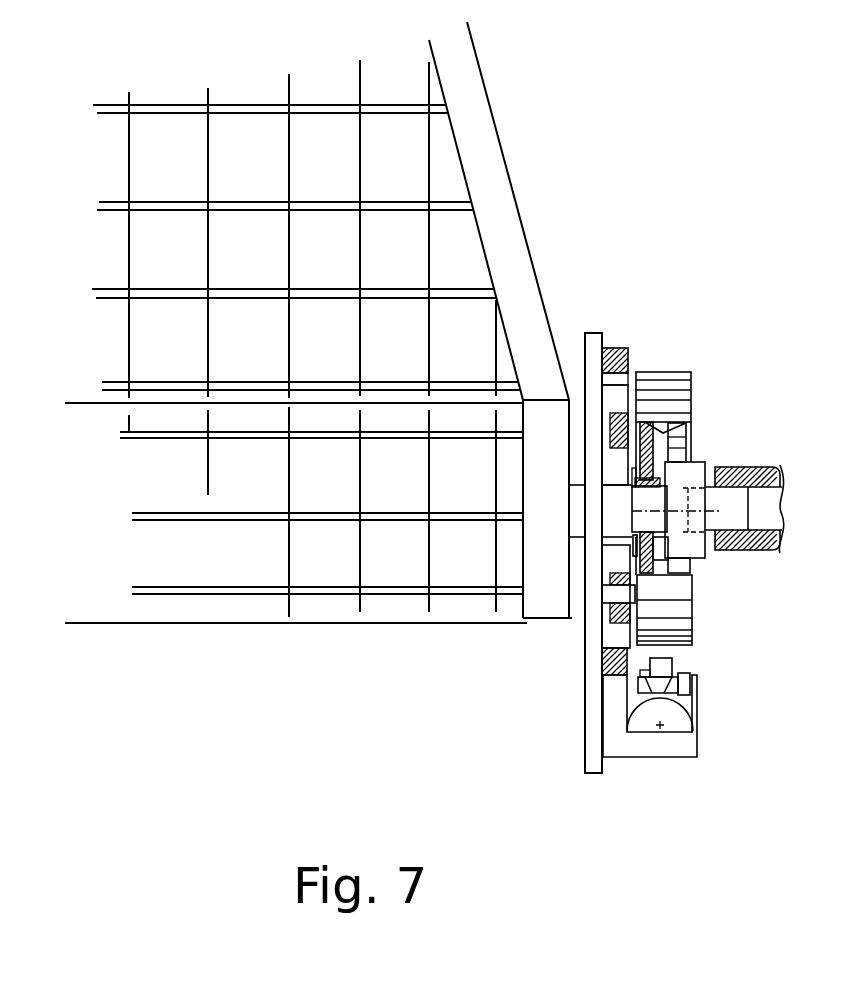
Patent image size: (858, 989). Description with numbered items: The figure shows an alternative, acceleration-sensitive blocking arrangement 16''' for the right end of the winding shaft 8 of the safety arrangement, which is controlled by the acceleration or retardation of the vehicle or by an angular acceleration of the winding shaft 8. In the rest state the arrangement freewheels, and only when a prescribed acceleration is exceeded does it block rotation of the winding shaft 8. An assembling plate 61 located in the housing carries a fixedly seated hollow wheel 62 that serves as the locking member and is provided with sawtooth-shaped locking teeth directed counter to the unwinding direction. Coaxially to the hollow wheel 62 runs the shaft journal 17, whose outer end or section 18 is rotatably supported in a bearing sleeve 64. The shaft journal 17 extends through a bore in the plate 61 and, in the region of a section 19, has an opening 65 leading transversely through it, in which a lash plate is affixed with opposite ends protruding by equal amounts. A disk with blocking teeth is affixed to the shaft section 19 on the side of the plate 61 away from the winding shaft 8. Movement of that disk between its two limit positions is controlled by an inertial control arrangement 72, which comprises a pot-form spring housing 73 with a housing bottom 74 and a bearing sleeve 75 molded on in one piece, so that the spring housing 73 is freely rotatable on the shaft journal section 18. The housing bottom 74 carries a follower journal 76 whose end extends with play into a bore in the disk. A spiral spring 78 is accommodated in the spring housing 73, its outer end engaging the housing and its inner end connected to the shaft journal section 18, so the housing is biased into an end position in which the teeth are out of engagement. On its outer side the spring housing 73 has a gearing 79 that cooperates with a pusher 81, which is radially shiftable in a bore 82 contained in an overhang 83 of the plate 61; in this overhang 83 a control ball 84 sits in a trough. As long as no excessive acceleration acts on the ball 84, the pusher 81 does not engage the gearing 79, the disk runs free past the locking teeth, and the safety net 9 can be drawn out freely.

The winding shaft 8 is at (83, 592).
The safety net 9 is at (502, 217).
The blocking arrangement 16''' is at (736, 194).
The shaft journal 17 is at (572, 534).
The outer end or section of shaft journal 18 is at (732, 507).
The shaft section 19 is at (600, 502).
The assembling plate 61 is at (585, 745).
The hollow wheel 62 is at (613, 347).
The bearing sleeve 64 is at (763, 478).
The opening 65 is at (618, 462).
The inertial control arrangement 72 is at (712, 350).
The spring housing 73 is at (705, 609).
The housing bottom 74 is at (690, 567).
The bearing sleeve 75 is at (612, 552).
The follower journal 76 is at (627, 590).
The spiral spring 78 is at (677, 450).
The gearing 79 is at (647, 373).
The pusher 81 is at (662, 668).
The bore 82 is at (687, 677).
The overhang 83 is at (623, 745).
The control ball 84 is at (678, 722).